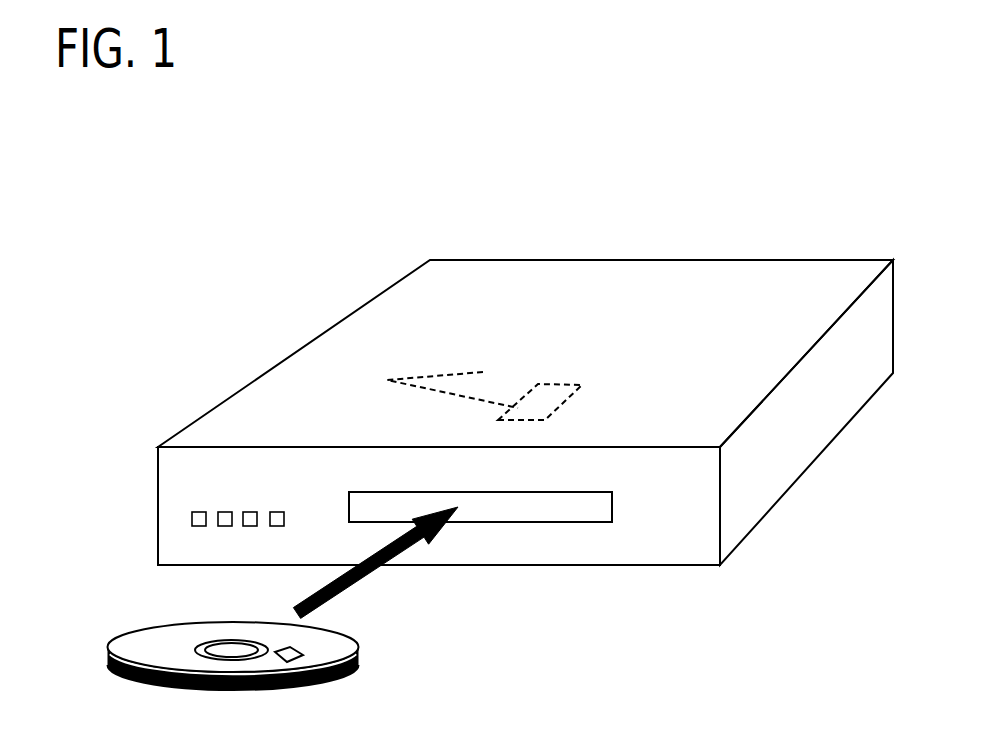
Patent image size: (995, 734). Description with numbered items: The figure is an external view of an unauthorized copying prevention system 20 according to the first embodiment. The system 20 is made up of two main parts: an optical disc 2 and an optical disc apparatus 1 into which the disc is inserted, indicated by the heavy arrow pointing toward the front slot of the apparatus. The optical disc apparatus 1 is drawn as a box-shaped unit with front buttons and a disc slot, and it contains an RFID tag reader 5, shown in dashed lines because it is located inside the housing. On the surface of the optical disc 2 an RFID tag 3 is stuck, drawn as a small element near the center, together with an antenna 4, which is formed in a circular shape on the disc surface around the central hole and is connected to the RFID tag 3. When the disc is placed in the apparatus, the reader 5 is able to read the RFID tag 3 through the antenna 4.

The optical disc apparatus 1 is at (498, 258).
The optical disc 2 is at (192, 648).
The RFID tag 3 is at (351, 679).
The antenna 4 is at (205, 643).
The RFID tag reader 5 is at (483, 372).
The unauthorized copying prevention system 20 is at (655, 162).